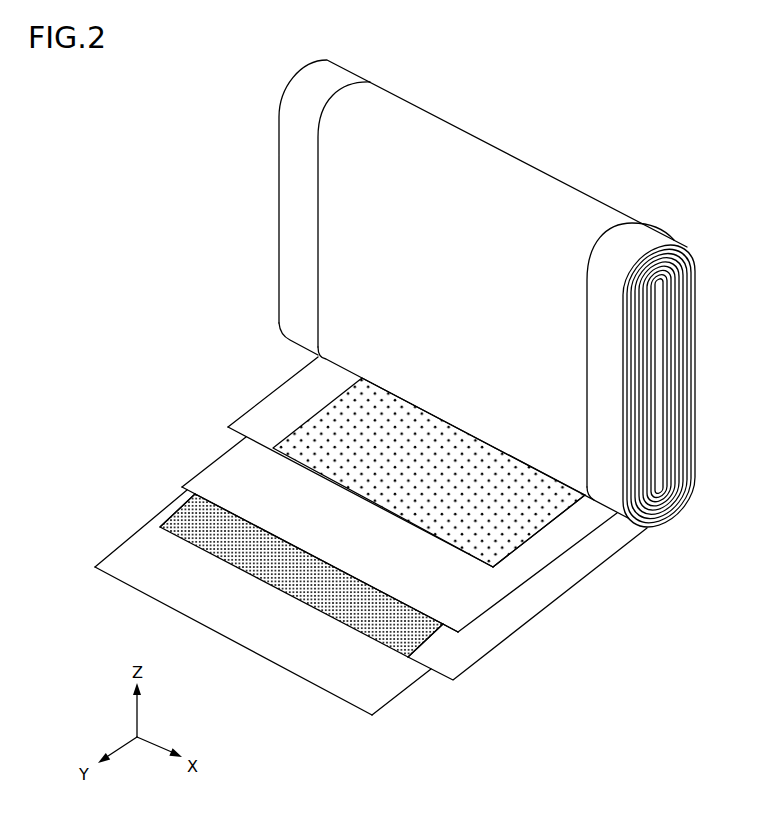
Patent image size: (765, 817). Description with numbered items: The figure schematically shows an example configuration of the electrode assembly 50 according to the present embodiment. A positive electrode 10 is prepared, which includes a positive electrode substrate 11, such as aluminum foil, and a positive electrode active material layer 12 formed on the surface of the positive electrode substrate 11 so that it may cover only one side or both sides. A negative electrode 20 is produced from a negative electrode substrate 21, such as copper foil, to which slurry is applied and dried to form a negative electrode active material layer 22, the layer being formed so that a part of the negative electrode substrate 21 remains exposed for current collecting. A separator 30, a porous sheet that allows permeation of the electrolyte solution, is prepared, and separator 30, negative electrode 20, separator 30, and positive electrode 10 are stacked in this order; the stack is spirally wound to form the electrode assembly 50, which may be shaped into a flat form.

The positive electrode 10 is at (198, 343).
The positive electrode substrate 11 is at (308, 388).
The positive electrode active material layer 12 is at (323, 437).
The negative electrode 20 is at (595, 724).
The negative electrode substrate 21 is at (520, 608).
The negative electrode active material layer 22 is at (373, 618).
The separator 30 is at (147, 560).
The electrode assembly 50 is at (670, 185).